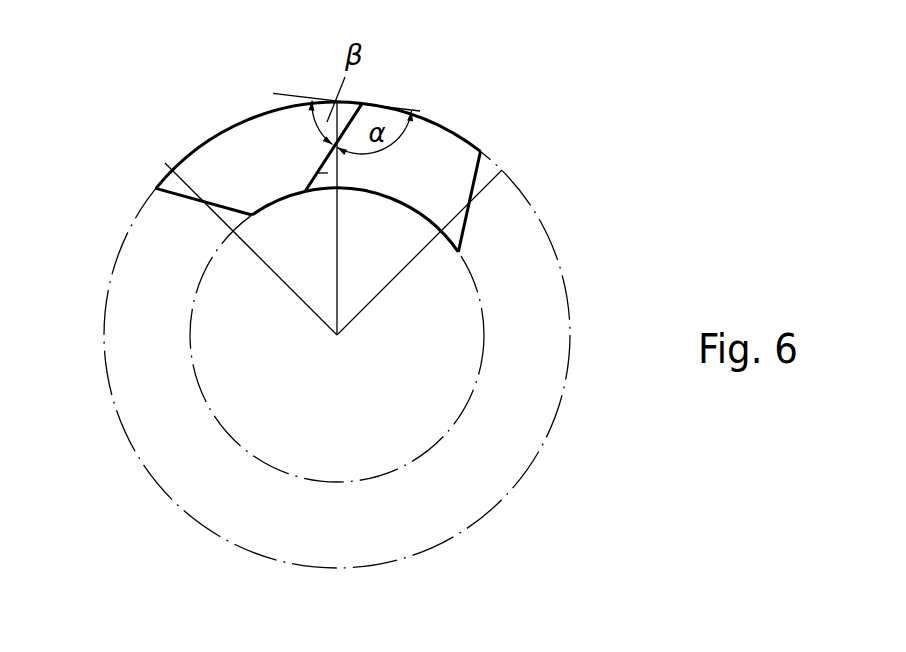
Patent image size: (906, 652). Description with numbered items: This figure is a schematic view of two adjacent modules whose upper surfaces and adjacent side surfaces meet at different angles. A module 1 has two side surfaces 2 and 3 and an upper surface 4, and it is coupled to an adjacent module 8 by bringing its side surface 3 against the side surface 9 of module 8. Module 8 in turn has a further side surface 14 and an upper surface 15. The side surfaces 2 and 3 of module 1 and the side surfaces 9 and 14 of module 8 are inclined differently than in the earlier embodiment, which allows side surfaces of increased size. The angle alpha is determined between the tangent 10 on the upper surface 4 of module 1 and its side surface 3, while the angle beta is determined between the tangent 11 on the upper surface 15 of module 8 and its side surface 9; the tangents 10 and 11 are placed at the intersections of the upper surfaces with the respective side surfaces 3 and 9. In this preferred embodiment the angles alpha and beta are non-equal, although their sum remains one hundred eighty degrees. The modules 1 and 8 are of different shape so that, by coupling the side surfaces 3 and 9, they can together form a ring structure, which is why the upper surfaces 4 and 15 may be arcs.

The module 1 is at (213, 166).
The side surface 2 is at (182, 194).
The side surface 3 is at (320, 170).
The upper surface 4 is at (190, 155).
The adjacent module 8 is at (467, 168).
The side surface 9 is at (322, 160).
The tangent 10 is at (332, 73).
The tangent 11 is at (293, 95).
The side surface 14 is at (465, 228).
The upper surface 15 is at (468, 142).